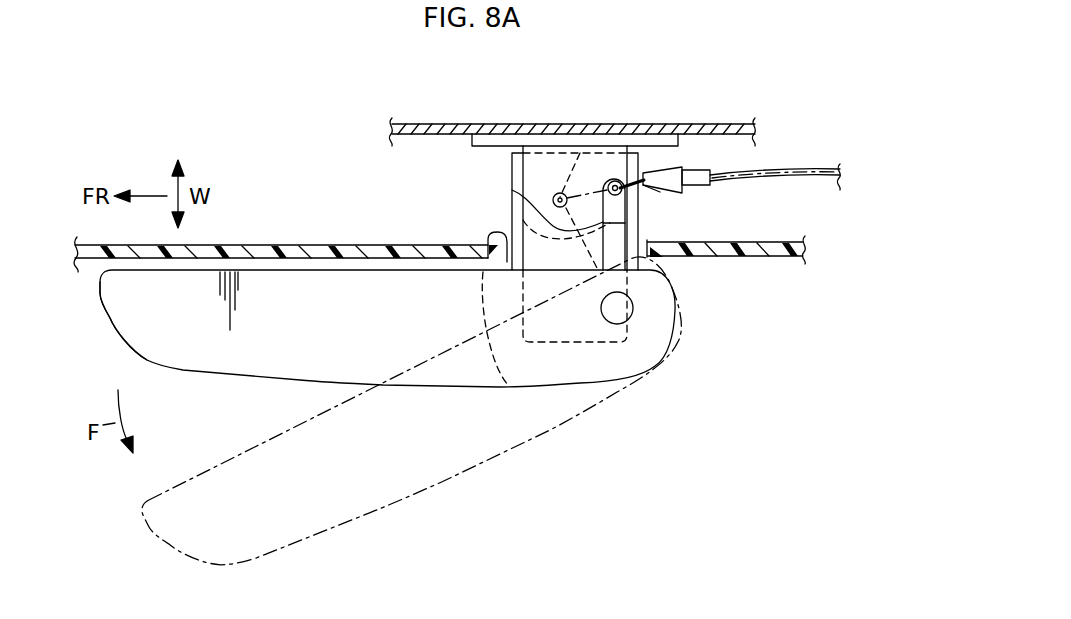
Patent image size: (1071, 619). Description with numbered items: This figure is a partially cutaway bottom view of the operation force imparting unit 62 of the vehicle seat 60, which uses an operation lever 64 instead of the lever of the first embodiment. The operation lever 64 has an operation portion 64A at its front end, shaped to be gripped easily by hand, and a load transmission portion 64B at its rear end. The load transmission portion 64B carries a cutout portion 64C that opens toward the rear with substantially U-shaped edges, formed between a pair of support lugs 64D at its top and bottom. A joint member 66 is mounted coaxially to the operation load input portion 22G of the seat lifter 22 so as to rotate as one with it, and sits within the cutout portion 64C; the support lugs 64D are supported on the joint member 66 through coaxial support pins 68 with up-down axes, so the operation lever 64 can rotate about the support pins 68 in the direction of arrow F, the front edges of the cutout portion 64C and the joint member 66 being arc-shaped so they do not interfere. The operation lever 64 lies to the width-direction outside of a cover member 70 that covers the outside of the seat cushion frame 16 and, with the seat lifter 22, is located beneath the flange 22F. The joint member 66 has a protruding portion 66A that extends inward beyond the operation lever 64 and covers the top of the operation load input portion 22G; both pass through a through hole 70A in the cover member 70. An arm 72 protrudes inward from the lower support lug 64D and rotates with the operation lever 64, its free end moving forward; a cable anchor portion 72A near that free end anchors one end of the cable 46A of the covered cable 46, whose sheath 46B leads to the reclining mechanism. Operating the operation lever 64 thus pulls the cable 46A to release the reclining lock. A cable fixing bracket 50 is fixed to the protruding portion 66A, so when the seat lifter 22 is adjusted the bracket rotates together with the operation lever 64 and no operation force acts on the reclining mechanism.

The vehicle seat 60 is at (804, 83).
The seat cushion frame 16 is at (440, 124).
The flange of roof frame 22F is at (686, 140).
The seat lifter 22 is at (575, 140).
The operation load input portion 22G is at (551, 166).
The protruding portion 66A is at (512, 170).
The joint member 66 is at (565, 370).
The arm 72 is at (512, 190).
The cable anchor portion 72A is at (566, 197).
The covered cable 46 is at (770, 180).
The cable 46A is at (645, 172).
The cable sheath 46B is at (796, 172).
The cable fixing bracket 50 is at (657, 194).
The cover member 70 is at (352, 245).
The through hole 70A is at (506, 236).
The operation lever 64 is at (415, 396).
The operation portion 64A is at (181, 356).
The load transmission portion 64B is at (387, 328).
The cutout portion 64C is at (483, 303).
The support lugs 64D is at (538, 370).
The support pins 68 is at (617, 310).
The operation force imparting unit 62 is at (714, 362).